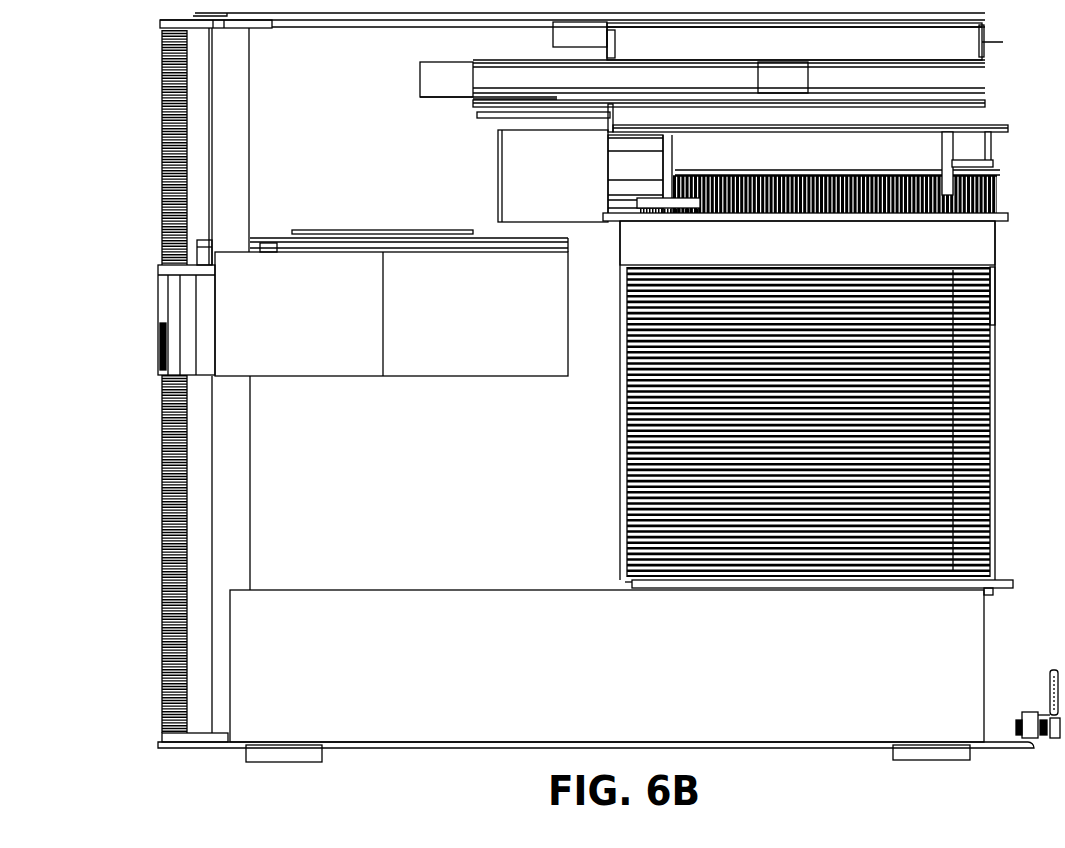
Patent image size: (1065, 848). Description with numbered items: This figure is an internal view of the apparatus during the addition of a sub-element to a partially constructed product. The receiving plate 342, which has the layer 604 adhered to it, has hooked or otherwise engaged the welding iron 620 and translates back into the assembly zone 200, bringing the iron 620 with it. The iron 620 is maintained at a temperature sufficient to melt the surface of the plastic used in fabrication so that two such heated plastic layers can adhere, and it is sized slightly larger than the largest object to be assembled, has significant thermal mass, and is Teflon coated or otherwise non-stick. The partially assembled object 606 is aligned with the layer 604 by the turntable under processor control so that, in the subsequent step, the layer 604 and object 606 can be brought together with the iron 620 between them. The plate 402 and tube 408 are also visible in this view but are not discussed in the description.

The assembly area 200 is at (328, 166).
The receiving plate 342 is at (420, 97).
The plate 402 is at (983, 100).
The tube 408 is at (982, 88).
The layer 604 is at (557, 99).
The partially assembled object 606 is at (332, 231).
The welding iron 620 is at (486, 119).